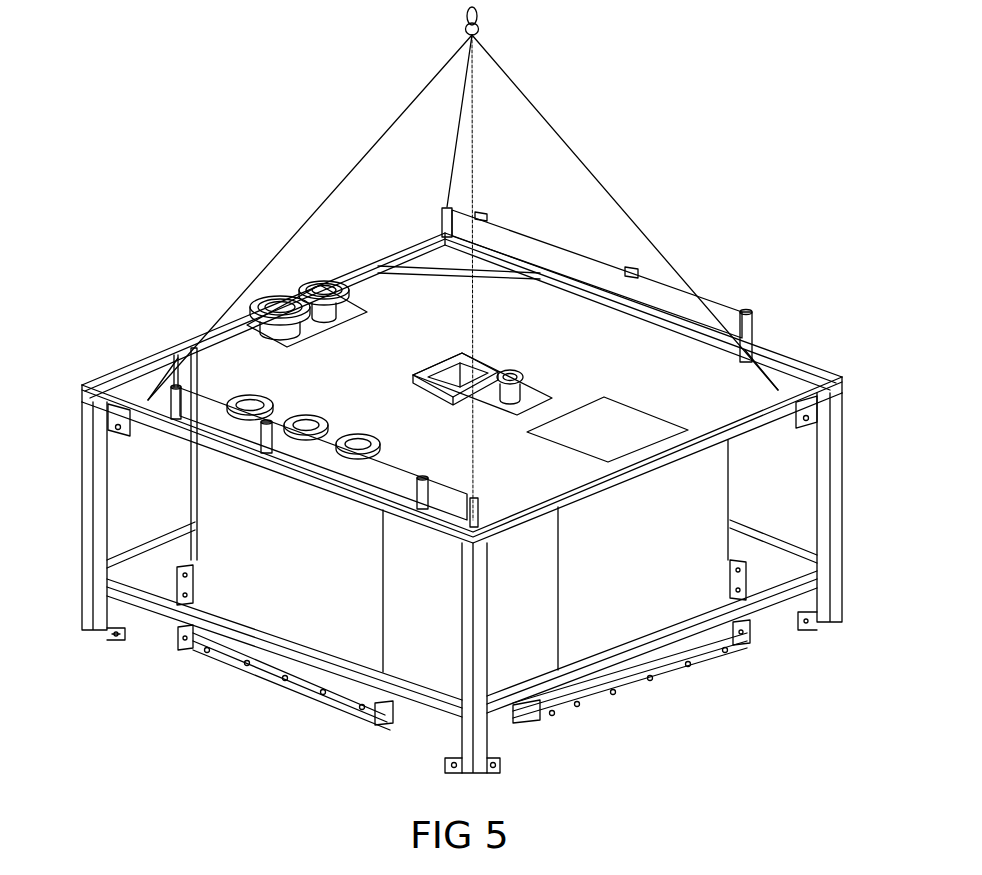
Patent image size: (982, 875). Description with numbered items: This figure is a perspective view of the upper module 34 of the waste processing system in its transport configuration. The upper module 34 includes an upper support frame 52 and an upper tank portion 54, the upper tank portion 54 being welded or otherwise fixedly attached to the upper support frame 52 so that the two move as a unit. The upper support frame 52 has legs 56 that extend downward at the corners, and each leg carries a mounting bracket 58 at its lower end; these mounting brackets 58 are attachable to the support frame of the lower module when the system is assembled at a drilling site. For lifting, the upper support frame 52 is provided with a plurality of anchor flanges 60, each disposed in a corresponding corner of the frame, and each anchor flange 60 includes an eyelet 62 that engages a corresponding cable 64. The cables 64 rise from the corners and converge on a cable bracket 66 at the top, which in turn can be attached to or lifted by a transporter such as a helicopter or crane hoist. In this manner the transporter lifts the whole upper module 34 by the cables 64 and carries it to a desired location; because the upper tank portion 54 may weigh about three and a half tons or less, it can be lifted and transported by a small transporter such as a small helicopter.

The upper module 34 is at (672, 190).
The upper support frame 52 is at (842, 375).
The upper tank portion 54 is at (643, 612).
The legs 56 is at (84, 620).
The mounting brackets 58 is at (112, 634).
The anchor flanges 60 is at (123, 418).
The eyelet 62 is at (116, 428).
The cables 64 is at (325, 192).
The cable bracket 66 is at (480, 31).